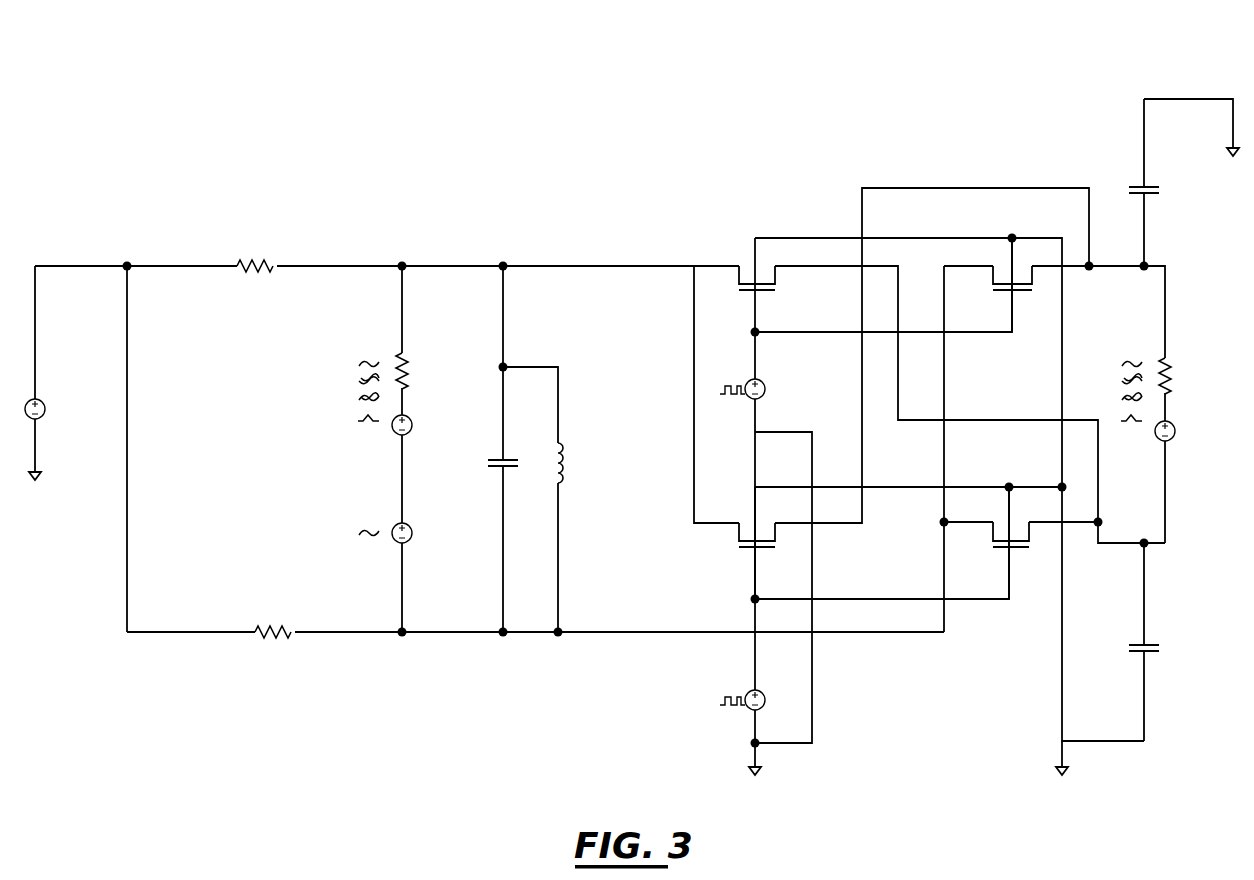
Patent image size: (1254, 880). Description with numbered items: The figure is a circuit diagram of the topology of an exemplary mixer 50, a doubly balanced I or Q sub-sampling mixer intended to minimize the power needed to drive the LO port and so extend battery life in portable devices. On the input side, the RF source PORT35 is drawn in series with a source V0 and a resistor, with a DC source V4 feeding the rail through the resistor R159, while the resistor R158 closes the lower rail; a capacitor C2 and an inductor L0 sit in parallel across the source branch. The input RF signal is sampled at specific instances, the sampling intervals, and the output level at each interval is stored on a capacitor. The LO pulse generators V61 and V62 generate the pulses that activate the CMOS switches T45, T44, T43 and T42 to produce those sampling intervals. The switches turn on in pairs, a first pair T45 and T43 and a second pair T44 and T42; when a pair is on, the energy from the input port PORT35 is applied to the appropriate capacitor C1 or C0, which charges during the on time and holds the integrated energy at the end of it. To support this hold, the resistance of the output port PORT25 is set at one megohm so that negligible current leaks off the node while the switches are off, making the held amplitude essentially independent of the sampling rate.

The mixer 50 is at (731, 76).
The resistor R159 is at (253, 251).
The resistor R158 is at (272, 617).
The DC voltage source V4 is at (70, 412).
The Port 35 PORT35 is at (419, 390).
The AC voltage source V0 is at (394, 518).
The capacitor C2 is at (512, 453).
The inductor L0 is at (577, 462).
The CMOS switch T45 is at (741, 285).
The CMOS switch T44 is at (741, 543).
The CMOS switch T43 is at (998, 285).
The CMOS switch T42 is at (996, 543).
The LO pulse generator V62 is at (761, 377).
The LO pulse generator V61 is at (761, 689).
The capacitor C1 is at (1153, 175).
The capacitor C0 is at (1153, 634).
The Port 25 PORT25 is at (1185, 398).